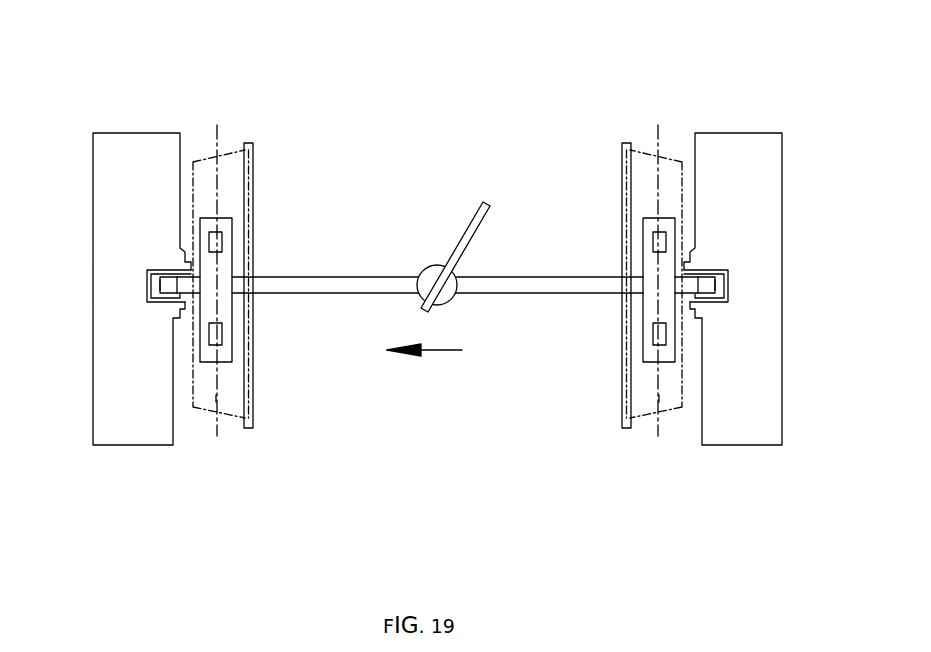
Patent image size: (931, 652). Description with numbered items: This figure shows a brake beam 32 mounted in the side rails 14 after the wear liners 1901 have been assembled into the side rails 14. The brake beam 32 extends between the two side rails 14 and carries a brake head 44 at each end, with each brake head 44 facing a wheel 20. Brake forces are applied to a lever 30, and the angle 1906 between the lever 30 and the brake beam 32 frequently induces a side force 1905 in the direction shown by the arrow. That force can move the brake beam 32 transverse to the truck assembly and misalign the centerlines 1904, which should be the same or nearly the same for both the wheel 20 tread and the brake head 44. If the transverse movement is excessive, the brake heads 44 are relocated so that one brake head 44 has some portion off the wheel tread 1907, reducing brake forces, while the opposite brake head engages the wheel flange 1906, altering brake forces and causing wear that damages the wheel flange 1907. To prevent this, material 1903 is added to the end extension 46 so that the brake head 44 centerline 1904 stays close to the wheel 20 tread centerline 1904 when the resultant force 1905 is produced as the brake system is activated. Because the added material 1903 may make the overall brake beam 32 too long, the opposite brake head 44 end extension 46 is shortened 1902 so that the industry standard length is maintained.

The side rail 14 is at (110, 163).
The wheel 20 is at (225, 200).
The lever 30 is at (472, 216).
The brake beam 32 is at (517, 276).
The brake head 44 is at (224, 314).
The end extension 46 is at (188, 285).
The wear liner 1901 is at (170, 270).
The shortened end extension 1902 is at (712, 287).
The added material 1903 is at (163, 287).
The centerline 1904 is at (219, 383).
The side force 1905 is at (432, 350).
The angle 1906 is at (253, 163).
The wheel tread 1907 is at (218, 158).